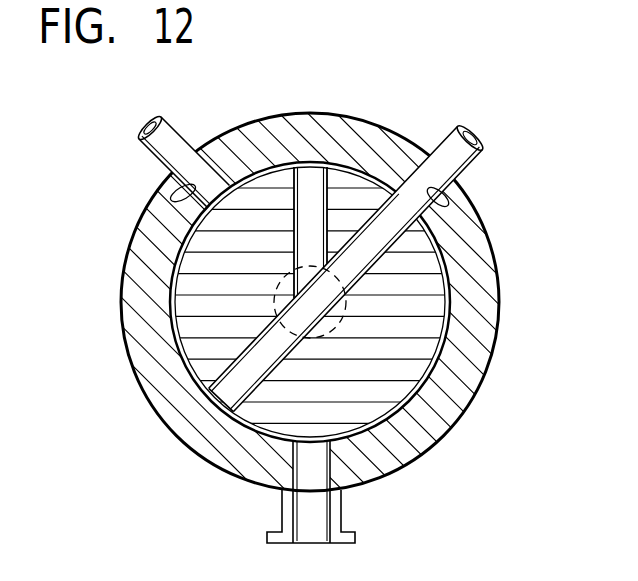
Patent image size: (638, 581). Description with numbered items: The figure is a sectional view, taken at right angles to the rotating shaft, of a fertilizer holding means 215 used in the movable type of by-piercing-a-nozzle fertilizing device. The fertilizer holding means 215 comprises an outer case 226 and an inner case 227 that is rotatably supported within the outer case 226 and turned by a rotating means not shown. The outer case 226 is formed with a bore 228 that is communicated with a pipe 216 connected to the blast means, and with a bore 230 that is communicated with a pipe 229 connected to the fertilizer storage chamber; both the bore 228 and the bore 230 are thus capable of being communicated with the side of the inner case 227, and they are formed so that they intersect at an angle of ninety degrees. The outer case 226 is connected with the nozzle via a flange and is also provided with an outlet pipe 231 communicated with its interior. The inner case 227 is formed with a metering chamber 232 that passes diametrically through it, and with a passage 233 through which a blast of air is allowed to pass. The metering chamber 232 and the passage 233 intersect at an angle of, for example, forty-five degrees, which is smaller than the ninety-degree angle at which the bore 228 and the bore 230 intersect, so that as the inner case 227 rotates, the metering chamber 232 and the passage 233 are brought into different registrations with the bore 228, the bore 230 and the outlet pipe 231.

The fertilizer holding means 215 is at (584, 323).
The pipe 216 is at (173, 139).
The outer case 226 is at (457, 396).
The inner case 227 is at (193, 312).
The bore 228 is at (176, 192).
The pipe 229 is at (453, 150).
The bore 230 is at (447, 200).
The outlet pipe 231 is at (341, 508).
The metering chamber 232 is at (381, 240).
The passage 233 is at (318, 190).